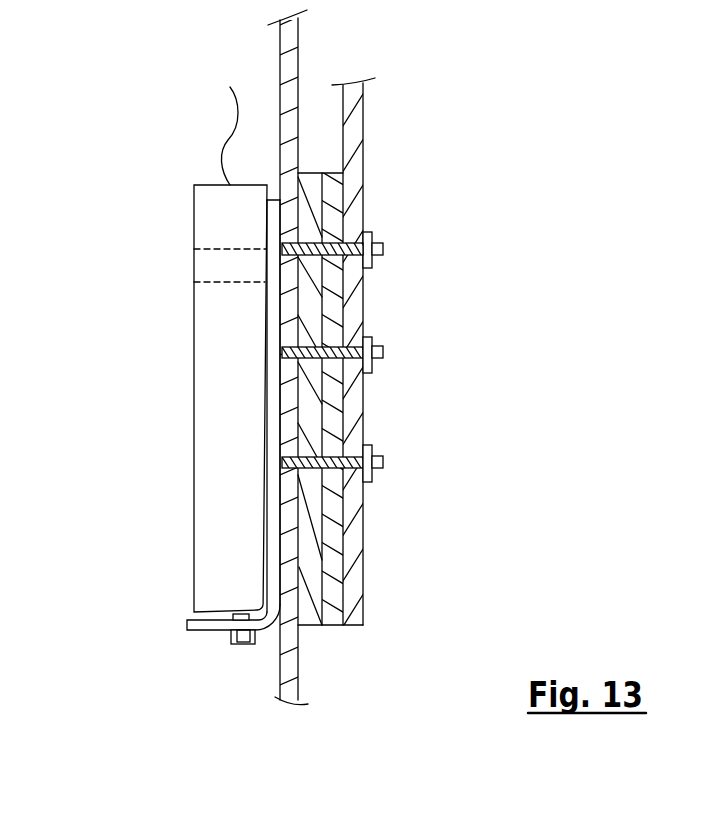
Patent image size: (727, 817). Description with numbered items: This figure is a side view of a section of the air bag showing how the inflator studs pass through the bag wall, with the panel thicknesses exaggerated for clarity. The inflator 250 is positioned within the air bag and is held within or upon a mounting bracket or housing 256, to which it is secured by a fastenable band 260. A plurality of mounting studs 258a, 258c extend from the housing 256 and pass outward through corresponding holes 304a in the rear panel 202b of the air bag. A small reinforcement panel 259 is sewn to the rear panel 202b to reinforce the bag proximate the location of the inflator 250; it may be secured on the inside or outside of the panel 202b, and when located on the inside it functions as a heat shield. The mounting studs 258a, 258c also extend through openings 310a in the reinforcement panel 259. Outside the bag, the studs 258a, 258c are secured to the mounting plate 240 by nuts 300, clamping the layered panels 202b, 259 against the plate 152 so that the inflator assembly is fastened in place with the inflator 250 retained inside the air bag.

The mounting plate 152 is at (358, 430).
The rear panel 202b is at (280, 659).
The mounting plate 240 is at (323, 322).
The inflator 250 is at (222, 515).
The mounting bracket or housing 256 is at (265, 340).
The mounting stud 258a is at (383, 249).
The mounting stud 258c is at (383, 462).
The reinforcement panel 259 is at (313, 180).
The band 260 is at (213, 270).
The nut 300 is at (364, 231).
The hole 304a is at (327, 628).
The opening 310a is at (290, 472).